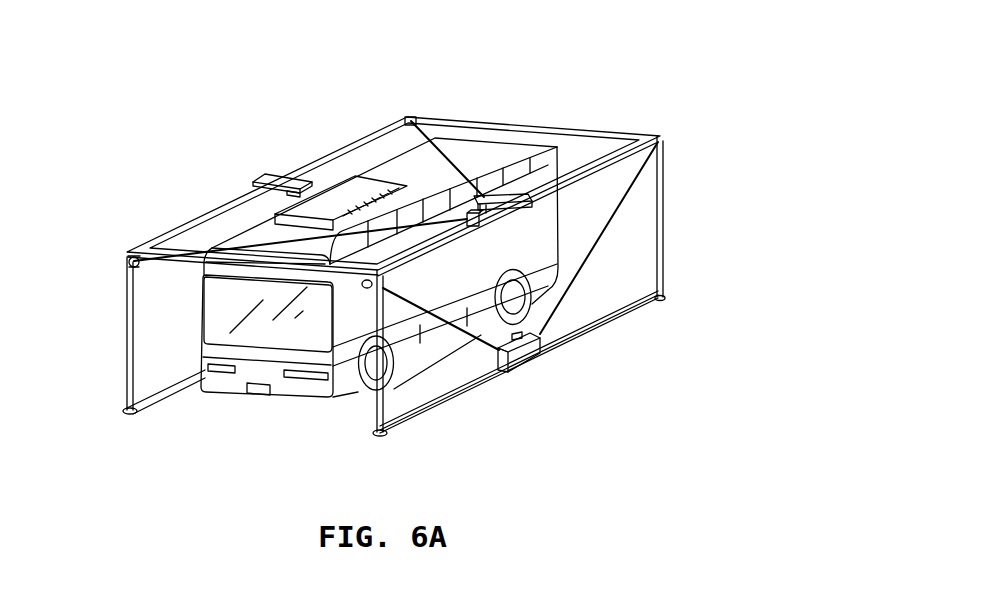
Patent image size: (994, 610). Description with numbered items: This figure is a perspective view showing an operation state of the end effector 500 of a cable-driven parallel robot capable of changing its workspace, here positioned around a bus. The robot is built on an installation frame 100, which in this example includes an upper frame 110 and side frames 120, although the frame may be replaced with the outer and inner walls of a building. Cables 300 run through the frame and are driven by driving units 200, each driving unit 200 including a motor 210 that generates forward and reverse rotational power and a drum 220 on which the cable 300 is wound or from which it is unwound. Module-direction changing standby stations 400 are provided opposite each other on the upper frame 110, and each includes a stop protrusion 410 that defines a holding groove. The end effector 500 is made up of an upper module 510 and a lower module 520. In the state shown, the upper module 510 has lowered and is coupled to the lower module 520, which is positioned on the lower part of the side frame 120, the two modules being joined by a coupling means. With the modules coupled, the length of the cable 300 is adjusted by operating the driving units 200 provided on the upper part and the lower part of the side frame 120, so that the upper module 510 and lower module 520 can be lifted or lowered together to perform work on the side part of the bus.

The installation frame 100 is at (428, 258).
The upper frame 110 is at (570, 128).
The side frame 120 is at (663, 220).
The driving unit 200 is at (135, 304).
The motor 210 is at (118, 263).
The drum 220 is at (128, 259).
The cable 300 is at (417, 222).
The module-direction changing standby station 400 is at (253, 180).
The stop protrusion 410 is at (287, 192).
The end effector 500 is at (537, 309).
The upper module 510 is at (506, 212).
The lower module 520 is at (513, 370).